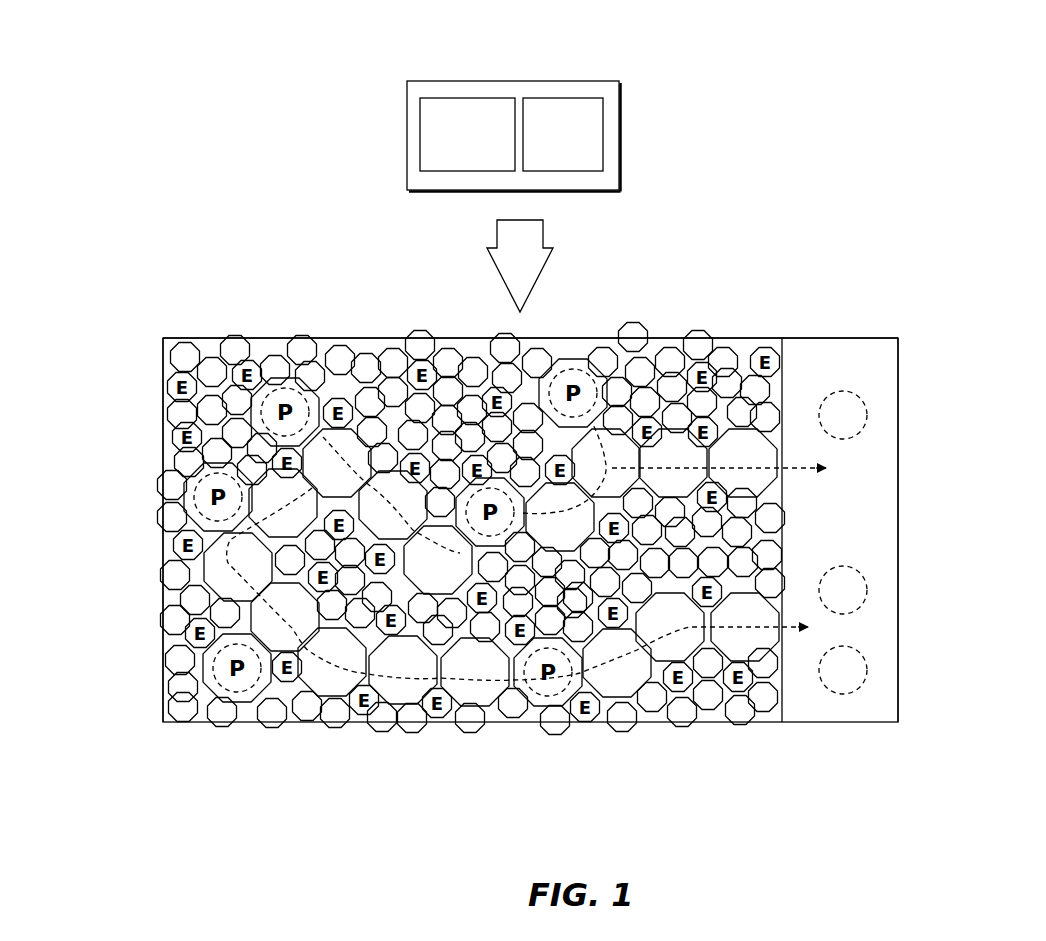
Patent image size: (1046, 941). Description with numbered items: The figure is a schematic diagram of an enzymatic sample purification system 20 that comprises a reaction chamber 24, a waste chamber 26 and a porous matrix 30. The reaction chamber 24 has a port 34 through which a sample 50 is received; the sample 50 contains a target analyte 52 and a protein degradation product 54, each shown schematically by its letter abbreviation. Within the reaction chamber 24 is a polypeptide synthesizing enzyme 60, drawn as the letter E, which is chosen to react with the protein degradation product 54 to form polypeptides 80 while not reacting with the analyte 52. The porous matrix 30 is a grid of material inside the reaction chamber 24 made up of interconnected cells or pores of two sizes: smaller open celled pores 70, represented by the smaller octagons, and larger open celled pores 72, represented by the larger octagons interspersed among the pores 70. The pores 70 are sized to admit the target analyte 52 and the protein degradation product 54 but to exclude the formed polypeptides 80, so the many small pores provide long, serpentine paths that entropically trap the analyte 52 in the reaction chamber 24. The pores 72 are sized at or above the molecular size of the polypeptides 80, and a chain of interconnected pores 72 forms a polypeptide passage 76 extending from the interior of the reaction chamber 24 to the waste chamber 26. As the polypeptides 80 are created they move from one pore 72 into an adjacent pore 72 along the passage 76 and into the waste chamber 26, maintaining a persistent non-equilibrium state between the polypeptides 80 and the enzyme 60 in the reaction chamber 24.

The enzymatic sample purification system 20 is at (132, 259).
The reaction chamber 24 is at (163, 380).
The waste chamber 26 is at (898, 432).
The porous matrix 30 is at (254, 336).
The port 34 is at (513, 340).
The sample 50 is at (407, 92).
The target analyte 52 is at (479, 98).
The protein degradation product 54 is at (590, 98).
The polypeptide synthesizing enzyme 60 is at (170, 440).
The open celled pores 70 is at (700, 338).
The open celled pores 72 is at (460, 722).
The polypeptide passage 76 is at (331, 712).
The polypeptides 80 is at (305, 390).